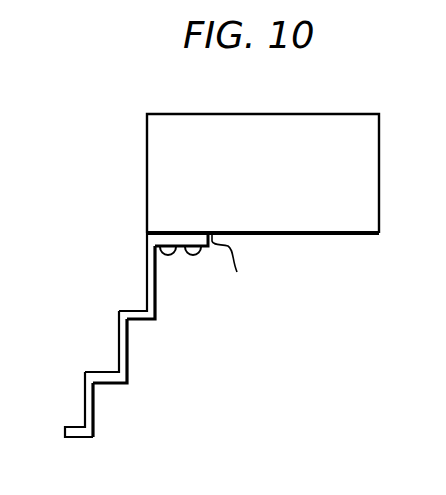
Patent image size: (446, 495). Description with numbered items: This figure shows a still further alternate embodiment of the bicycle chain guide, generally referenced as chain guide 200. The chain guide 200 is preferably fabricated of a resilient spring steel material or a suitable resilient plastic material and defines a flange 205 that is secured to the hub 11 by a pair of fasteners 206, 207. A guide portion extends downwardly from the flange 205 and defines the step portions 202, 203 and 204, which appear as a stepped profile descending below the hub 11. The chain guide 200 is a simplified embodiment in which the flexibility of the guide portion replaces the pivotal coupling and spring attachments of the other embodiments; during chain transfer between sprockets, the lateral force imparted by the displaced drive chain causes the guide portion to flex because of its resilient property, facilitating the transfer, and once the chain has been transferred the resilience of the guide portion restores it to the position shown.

The hub 11 is at (352, 170).
The chain guide 200 is at (306, 263).
The step portion 202 is at (138, 306).
The step portion 203 is at (102, 368).
The step portion 204 is at (77, 420).
The flange 205 is at (244, 262).
The fastener 206 is at (168, 257).
The fastener 207 is at (193, 257).